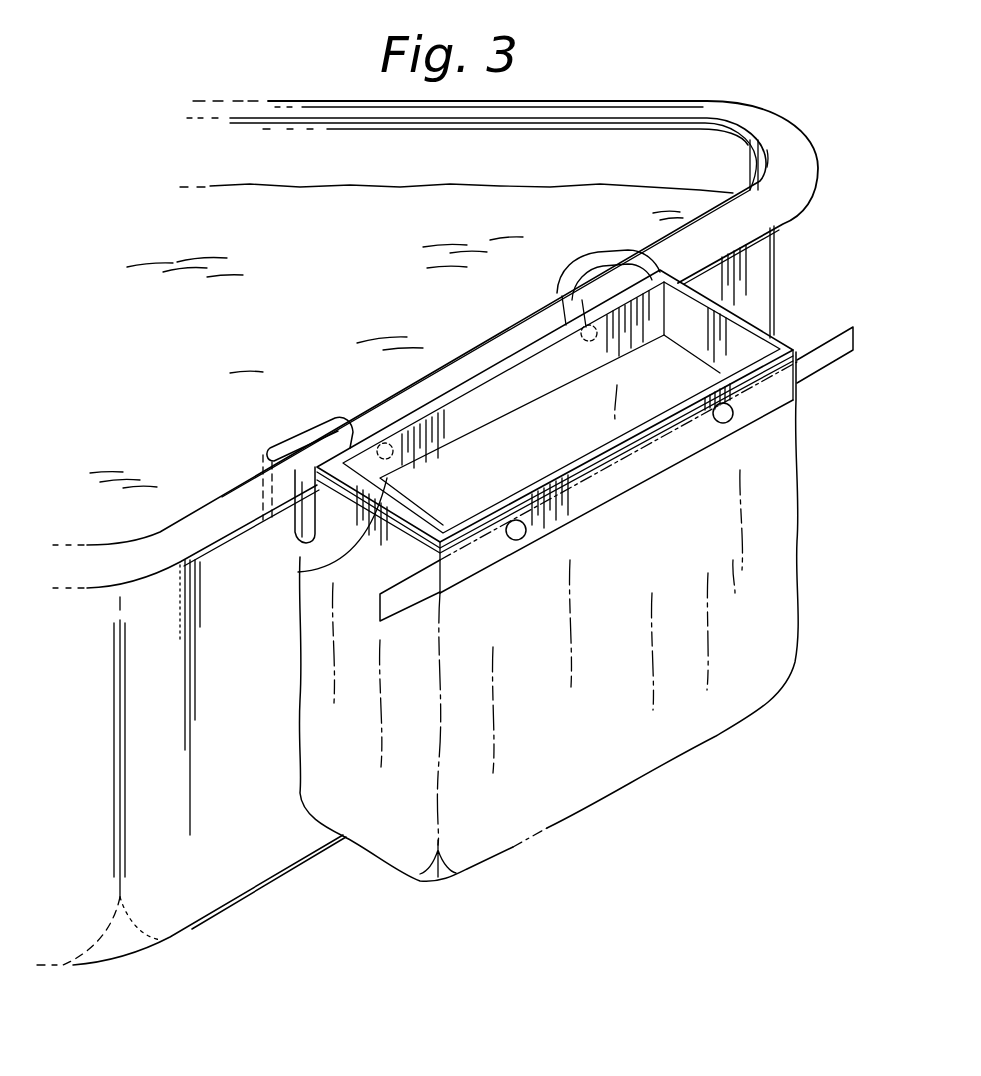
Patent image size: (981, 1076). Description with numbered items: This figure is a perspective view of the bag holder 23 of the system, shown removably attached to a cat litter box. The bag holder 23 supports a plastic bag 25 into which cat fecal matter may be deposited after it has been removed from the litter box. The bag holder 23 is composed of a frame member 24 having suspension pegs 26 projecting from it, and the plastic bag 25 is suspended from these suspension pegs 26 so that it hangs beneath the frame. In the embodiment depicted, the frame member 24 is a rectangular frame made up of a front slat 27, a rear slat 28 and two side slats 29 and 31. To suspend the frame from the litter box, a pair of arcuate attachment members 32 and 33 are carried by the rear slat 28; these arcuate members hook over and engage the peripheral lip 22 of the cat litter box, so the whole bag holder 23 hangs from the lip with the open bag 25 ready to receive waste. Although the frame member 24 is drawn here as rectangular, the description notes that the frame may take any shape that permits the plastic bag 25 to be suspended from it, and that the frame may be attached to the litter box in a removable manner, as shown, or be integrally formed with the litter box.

The peripheral lip 22 is at (705, 85).
The bag holder 23 is at (737, 306).
The frame member 24 is at (687, 316).
The plastic bag 25 is at (773, 542).
The suspension pegs 26 is at (385, 443).
The front slat 27 is at (600, 483).
The rear slat 28 is at (483, 397).
The side slat 29 is at (298, 570).
The side slat 31 is at (763, 325).
The arcuate attachment member 32 is at (330, 393).
The arcuate attachment member 33 is at (624, 229).